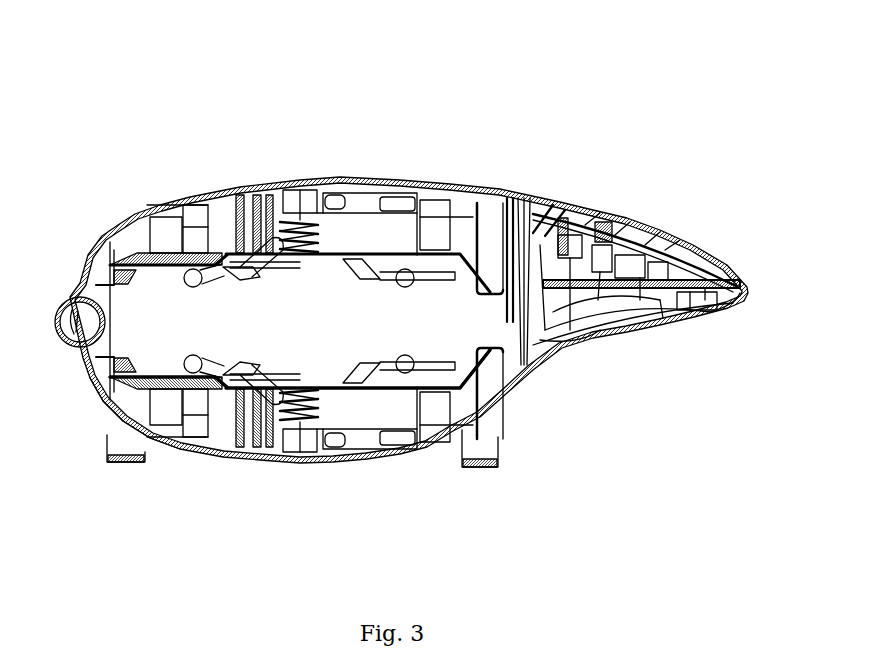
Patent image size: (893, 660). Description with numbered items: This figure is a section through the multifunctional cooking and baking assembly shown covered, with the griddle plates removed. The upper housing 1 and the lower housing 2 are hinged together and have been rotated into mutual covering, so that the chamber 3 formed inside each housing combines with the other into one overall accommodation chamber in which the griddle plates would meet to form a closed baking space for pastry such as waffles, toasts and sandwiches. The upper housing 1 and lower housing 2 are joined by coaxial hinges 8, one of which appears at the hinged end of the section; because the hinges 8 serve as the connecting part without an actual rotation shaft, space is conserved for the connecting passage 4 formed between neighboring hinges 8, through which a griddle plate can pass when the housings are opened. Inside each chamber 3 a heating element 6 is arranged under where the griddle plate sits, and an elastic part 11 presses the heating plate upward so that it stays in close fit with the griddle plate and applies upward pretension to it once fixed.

The upper housing 1 is at (423, 182).
The lower housing 2 is at (257, 457).
The chamber 3 is at (347, 413).
The connecting passage 4 is at (64, 296).
The heating element 6 is at (243, 228).
The hinge 8 is at (73, 353).
The elastic part 11 is at (352, 183).